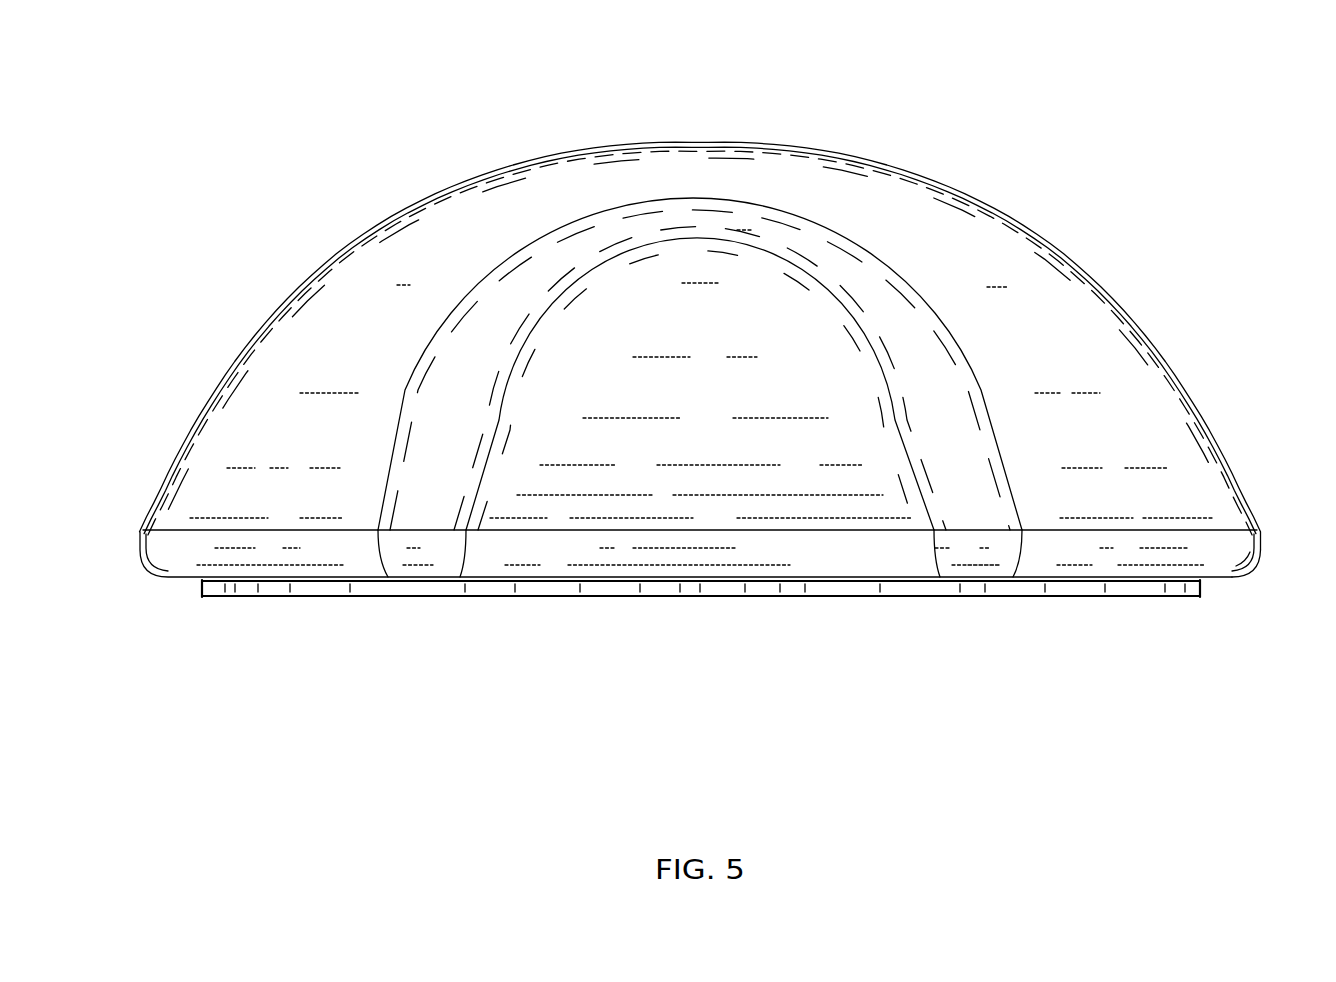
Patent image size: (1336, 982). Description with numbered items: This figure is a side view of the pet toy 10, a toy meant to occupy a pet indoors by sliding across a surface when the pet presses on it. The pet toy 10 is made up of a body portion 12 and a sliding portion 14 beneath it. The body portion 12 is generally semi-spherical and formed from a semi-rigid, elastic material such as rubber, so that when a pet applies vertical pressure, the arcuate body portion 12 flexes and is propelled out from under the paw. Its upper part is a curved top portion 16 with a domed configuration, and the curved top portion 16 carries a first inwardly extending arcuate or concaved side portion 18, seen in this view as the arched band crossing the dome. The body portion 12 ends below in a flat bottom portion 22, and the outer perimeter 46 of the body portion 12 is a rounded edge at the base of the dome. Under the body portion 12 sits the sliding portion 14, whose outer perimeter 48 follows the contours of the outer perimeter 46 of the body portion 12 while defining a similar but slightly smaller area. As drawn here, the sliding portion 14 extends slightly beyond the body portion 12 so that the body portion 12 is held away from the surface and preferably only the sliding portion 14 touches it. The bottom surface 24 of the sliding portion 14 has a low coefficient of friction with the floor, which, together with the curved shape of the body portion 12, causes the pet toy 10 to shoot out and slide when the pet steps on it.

The pet toy 10 is at (1024, 101).
The body portion 12 is at (1050, 246).
The sliding portion 14 is at (1122, 598).
The curved top portion 16 is at (1128, 358).
The first inwardly extending arcuate side portion 18 is at (707, 440).
The flat bottom portion 22 is at (1222, 578).
The bottom surface 24 is at (263, 598).
The outer perimeter of the body portion 46 is at (1260, 568).
The outer perimeter of the sliding portion 48 is at (198, 583).